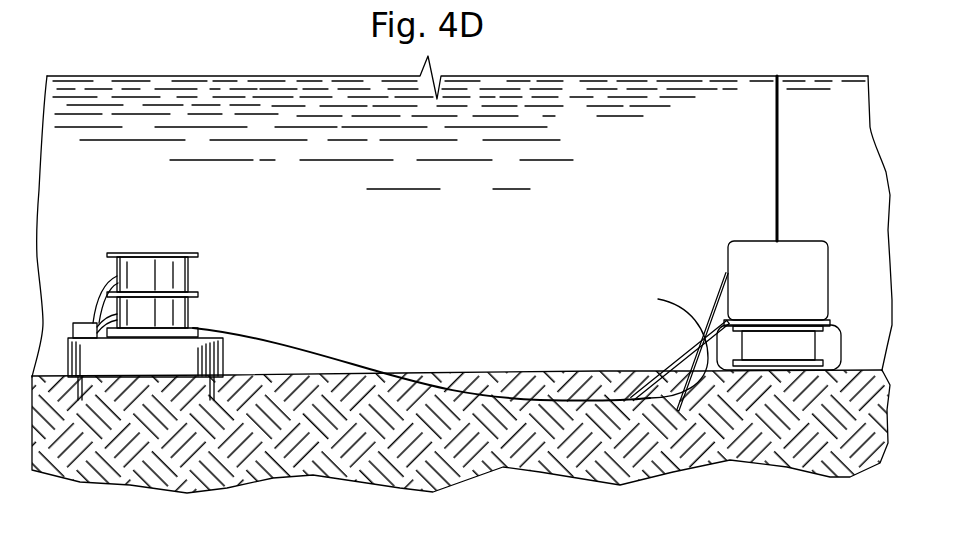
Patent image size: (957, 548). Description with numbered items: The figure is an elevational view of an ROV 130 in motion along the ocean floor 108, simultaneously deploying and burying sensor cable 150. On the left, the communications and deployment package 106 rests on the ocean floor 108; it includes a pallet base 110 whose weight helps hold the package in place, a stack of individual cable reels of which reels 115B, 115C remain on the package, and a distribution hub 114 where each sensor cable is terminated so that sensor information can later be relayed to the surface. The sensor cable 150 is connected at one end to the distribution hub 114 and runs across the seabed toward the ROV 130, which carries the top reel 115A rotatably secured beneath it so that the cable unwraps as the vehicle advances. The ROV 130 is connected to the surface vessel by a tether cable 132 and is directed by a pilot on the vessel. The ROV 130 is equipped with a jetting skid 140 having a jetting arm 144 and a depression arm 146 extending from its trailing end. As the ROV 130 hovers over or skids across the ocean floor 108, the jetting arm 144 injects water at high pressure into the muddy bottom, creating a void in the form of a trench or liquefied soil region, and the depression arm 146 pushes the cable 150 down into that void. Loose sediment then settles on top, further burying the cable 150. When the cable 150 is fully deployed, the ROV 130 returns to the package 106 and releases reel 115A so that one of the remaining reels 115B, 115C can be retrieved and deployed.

The communications and deployment package 106 is at (245, 262).
The ocean floor 108 is at (485, 372).
The pallet base 110 is at (224, 362).
The distribution hub 114 is at (85, 323).
The top reel 115A is at (791, 337).
The second cable reel 115B is at (141, 277).
The third cable reel 115C is at (165, 316).
The ROV 130 is at (692, 238).
The tether cable 132 is at (777, 136).
The jetting skid 140 is at (823, 348).
The jetting arm 144 is at (700, 322).
The depression arm 146 is at (684, 366).
The sensor cable 150 is at (367, 377).